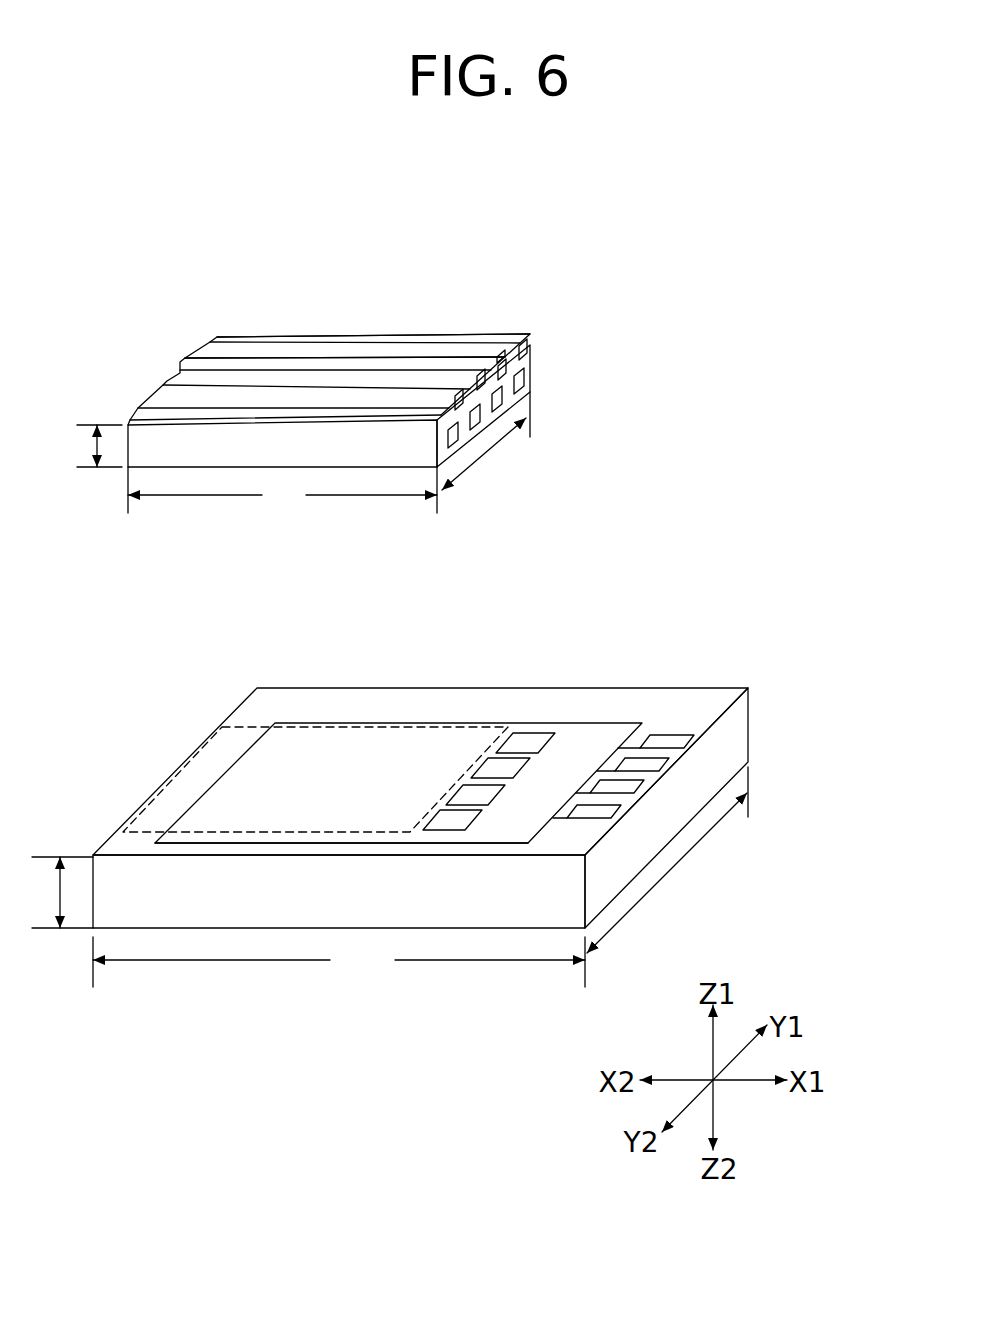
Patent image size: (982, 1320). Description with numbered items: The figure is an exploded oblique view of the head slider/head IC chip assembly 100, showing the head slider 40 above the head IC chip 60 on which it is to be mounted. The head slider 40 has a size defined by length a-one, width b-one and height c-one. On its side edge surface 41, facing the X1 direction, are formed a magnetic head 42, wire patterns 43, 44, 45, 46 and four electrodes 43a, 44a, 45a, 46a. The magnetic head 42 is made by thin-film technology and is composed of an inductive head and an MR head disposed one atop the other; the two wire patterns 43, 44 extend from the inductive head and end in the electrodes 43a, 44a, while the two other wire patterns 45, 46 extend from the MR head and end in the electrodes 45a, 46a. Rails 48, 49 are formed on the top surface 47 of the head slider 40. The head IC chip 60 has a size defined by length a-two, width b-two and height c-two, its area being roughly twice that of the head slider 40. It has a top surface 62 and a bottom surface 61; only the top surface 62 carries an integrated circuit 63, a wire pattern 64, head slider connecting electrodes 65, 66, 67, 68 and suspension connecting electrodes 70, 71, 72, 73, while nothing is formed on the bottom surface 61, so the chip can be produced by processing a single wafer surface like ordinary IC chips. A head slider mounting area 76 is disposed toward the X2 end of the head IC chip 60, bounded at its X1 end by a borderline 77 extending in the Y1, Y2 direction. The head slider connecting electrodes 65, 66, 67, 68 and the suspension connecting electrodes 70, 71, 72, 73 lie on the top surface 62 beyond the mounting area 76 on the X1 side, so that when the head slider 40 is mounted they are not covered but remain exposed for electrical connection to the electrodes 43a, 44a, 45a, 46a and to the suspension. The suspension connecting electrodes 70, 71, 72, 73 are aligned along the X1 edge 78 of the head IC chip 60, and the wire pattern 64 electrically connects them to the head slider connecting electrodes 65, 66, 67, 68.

The head slider/head IC chip assembly 100 is at (563, 185).
The head slider 40 is at (317, 318).
The side edge surface 41 is at (517, 352).
The magnetic head 42 is at (508, 353).
The wire pattern 43 is at (520, 360).
The electrode 43a is at (522, 383).
The wire pattern 44 is at (505, 400).
The electrode 44a is at (500, 405).
The wire pattern 45 is at (490, 373).
The electrode 45a is at (474, 430).
The wire pattern 46 is at (455, 397).
The electrode 46a is at (452, 448).
The top surface 47 is at (223, 337).
The rail 48 is at (247, 352).
The rail 49 is at (163, 395).
The head IC chip 60 is at (783, 710).
The bottom surface 61 is at (413, 903).
The top surface 62 is at (633, 700).
The integrated circuit 63 is at (572, 722).
The wire pattern 64 is at (643, 737).
The head slider connecting electrode 65 is at (517, 743).
The head slider connecting electrode 66 is at (492, 770).
The head slider connecting electrode 67 is at (470, 790).
The head slider connecting electrode 68 is at (425, 813).
The suspension connecting electrode 70 is at (690, 742).
The suspension connecting electrode 71 is at (667, 763).
The suspension connecting electrode 72 is at (648, 790).
The suspension connecting electrode 73 is at (607, 813).
The head slider mounting area 76 is at (243, 727).
The borderline 77 is at (453, 840).
The X1 edge 78 is at (715, 723).